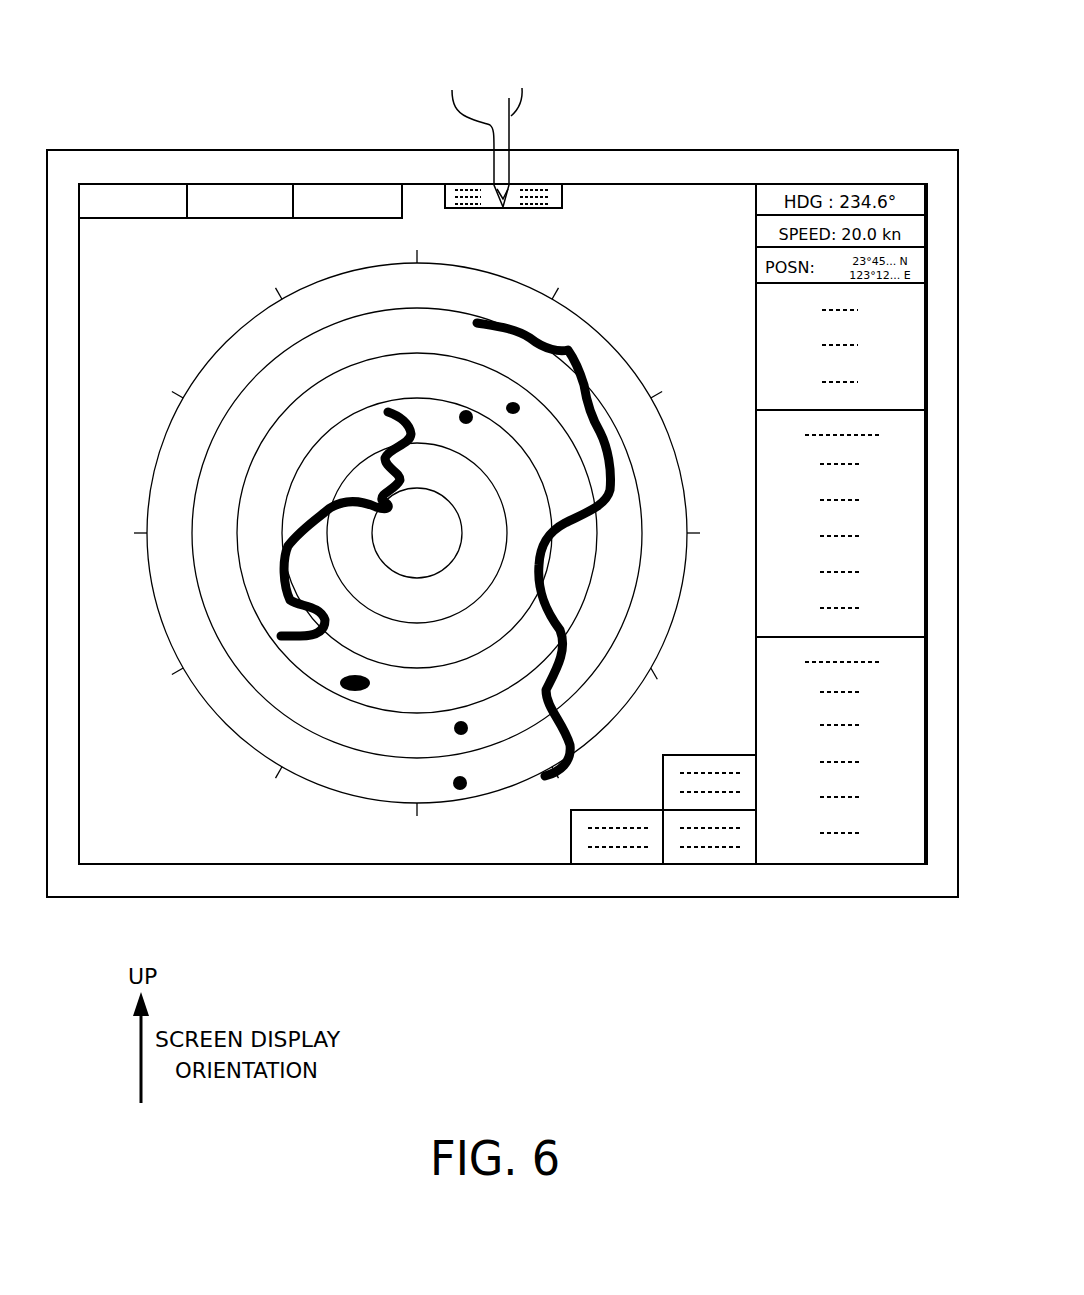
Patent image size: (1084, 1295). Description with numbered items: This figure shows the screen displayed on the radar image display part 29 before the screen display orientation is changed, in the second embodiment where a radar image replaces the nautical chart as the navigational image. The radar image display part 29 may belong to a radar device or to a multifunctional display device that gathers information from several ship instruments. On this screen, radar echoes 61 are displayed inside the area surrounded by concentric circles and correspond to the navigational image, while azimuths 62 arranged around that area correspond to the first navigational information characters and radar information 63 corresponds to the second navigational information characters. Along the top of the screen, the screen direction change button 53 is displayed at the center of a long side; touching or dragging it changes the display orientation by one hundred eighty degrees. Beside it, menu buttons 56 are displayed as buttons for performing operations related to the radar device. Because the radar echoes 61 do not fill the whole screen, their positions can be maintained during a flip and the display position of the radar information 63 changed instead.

The radar image display part 29 is at (84, 118).
The menu buttons 56 is at (238, 196).
The screen direction change button 53 is at (457, 191).
The azimuths 62 is at (572, 272).
The radar echoes 61 is at (568, 352).
The radar information 63 is at (829, 850).